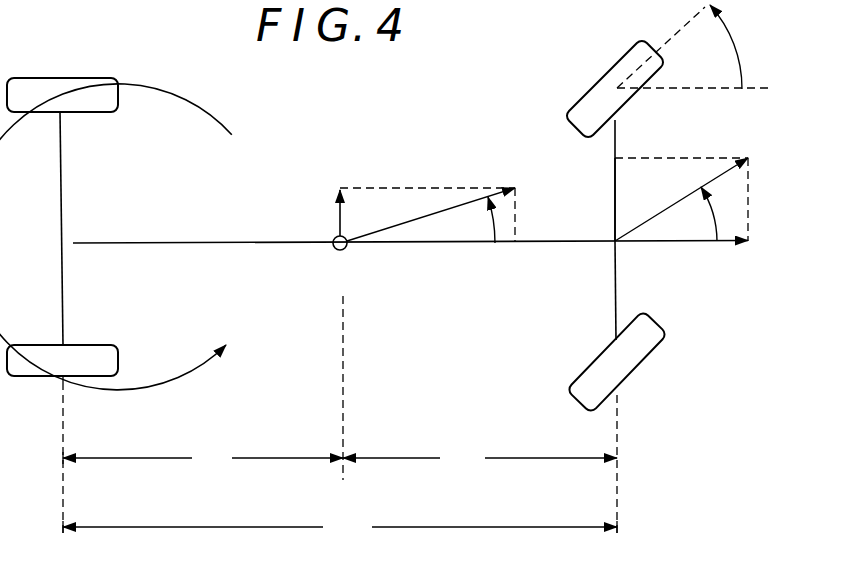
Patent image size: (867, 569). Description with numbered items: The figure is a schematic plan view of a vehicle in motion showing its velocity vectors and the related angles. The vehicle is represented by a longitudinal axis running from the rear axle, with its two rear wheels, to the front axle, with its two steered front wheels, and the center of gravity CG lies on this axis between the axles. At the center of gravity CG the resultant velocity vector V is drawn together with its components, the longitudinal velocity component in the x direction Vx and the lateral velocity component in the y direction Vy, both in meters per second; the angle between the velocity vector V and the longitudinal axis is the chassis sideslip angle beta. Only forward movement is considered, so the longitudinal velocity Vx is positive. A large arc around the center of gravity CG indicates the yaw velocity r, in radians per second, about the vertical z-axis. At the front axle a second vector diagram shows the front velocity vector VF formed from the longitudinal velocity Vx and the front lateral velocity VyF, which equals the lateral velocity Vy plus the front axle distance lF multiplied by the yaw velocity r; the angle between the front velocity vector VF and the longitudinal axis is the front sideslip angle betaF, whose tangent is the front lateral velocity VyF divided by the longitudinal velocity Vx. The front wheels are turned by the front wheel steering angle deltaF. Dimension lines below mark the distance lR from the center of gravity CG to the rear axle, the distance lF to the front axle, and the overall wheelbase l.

The center of gravity CG is at (336, 261).
The velocity vector V is at (413, 197).
The velocity component in the x direction Vx is at (410, 263).
The velocity component in the y direction Vy is at (319, 213).
The lateral velocity at the front axle VyF is at (581, 199).
The front velocity vector VF is at (668, 170).
The chassis sideslip angle beta is at (482, 220).
The front sideslip angle betaF is at (697, 214).
The front wheel steering angle deltaF is at (695, 47).
The yaw velocity r is at (116, 237).
The distance from center of gravity to rear axle lR is at (203, 461).
The distance from center of gravity to front axle lF is at (480, 461).
The wheelbase l is at (340, 527).